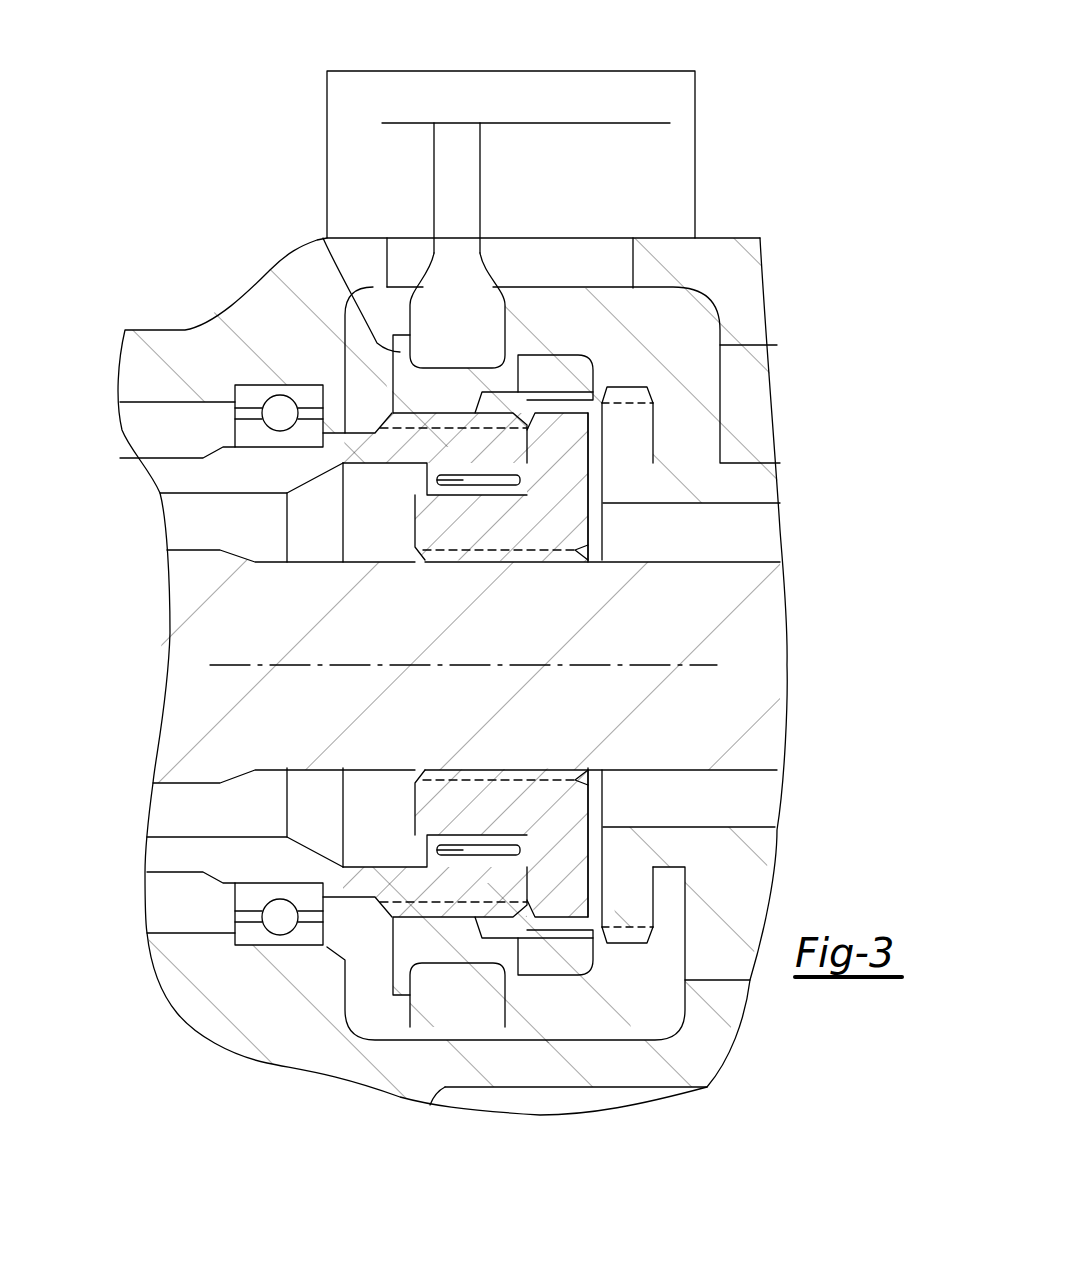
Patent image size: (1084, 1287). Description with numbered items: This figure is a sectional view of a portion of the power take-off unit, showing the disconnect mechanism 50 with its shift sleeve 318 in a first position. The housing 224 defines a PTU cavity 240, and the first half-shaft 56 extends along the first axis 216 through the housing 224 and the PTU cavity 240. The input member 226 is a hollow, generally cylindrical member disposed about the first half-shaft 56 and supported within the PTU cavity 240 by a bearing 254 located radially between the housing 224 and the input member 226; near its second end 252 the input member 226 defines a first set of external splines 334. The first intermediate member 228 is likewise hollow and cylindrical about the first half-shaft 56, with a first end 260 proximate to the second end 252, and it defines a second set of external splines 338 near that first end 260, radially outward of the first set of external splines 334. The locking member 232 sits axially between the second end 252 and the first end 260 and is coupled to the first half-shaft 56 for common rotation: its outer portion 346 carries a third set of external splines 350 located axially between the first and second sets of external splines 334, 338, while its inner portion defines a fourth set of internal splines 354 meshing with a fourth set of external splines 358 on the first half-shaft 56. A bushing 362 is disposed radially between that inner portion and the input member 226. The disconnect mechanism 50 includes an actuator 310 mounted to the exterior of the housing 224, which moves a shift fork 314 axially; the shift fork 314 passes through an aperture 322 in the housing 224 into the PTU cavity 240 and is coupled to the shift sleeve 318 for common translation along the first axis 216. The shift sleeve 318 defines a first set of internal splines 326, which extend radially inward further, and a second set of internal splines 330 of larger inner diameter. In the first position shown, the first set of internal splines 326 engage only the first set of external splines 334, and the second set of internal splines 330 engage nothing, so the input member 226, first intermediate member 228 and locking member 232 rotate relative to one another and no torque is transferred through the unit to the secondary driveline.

The disconnect mechanism 50 is at (664, 68).
The first half-shaft 56 is at (210, 617).
The first axis 216 is at (297, 667).
The housing 224 is at (150, 330).
The input member 226 is at (192, 482).
The first intermediate member 228 is at (760, 488).
The locking member 232 is at (536, 535).
The PTU cavity 240 is at (687, 315).
The second end 252 is at (528, 447).
The bearing 254 is at (280, 425).
The first end 260 is at (602, 457).
The actuator 310 is at (327, 93).
The shift fork 314 is at (434, 163).
The shift sleeve 318 is at (325, 240).
The aperture 322 is at (633, 262).
The first set of internal splines 326 is at (393, 420).
The second set of internal splines 330 is at (580, 397).
The first set of external splines 334 is at (503, 420).
The second set of external splines 338 is at (634, 393).
The outer portion 346 is at (603, 538).
The third set of external splines 350 is at (567, 423).
The fourth set of internal splines 354 is at (505, 560).
The fourth set of external splines 358 is at (468, 778).
The bushing 362 is at (445, 480).